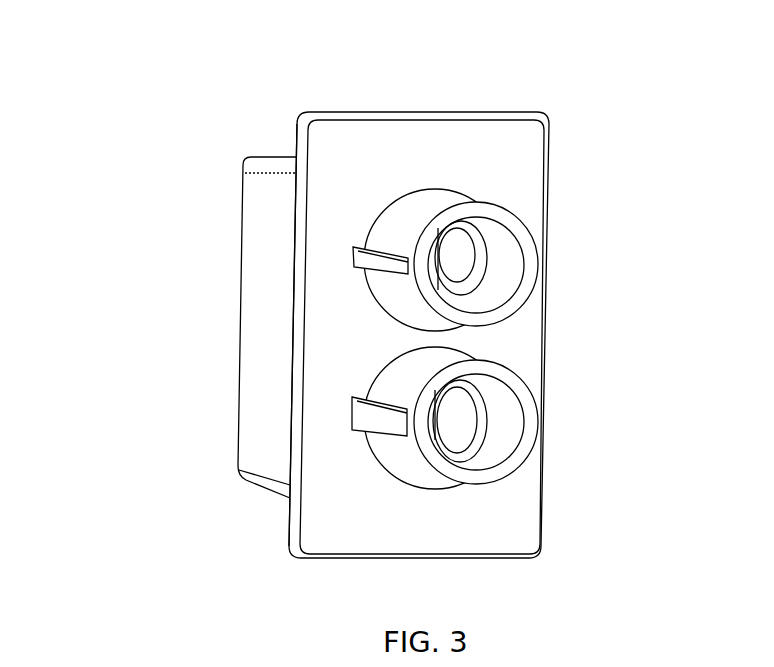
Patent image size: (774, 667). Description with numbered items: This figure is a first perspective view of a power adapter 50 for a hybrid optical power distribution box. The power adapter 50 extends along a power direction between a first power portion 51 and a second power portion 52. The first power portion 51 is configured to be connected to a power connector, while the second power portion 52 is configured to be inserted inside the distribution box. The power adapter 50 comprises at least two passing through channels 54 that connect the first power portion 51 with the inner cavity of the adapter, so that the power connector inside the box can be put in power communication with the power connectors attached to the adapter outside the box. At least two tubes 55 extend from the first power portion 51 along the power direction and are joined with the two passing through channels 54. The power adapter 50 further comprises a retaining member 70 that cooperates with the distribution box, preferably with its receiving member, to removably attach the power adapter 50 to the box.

The power adapter 50 is at (170, 230).
The first power portion 51 is at (545, 179).
The second power portion 52 is at (232, 398).
The passing through channel 54 is at (437, 262).
The tube 55 is at (410, 213).
The retaining member 70 is at (305, 507).